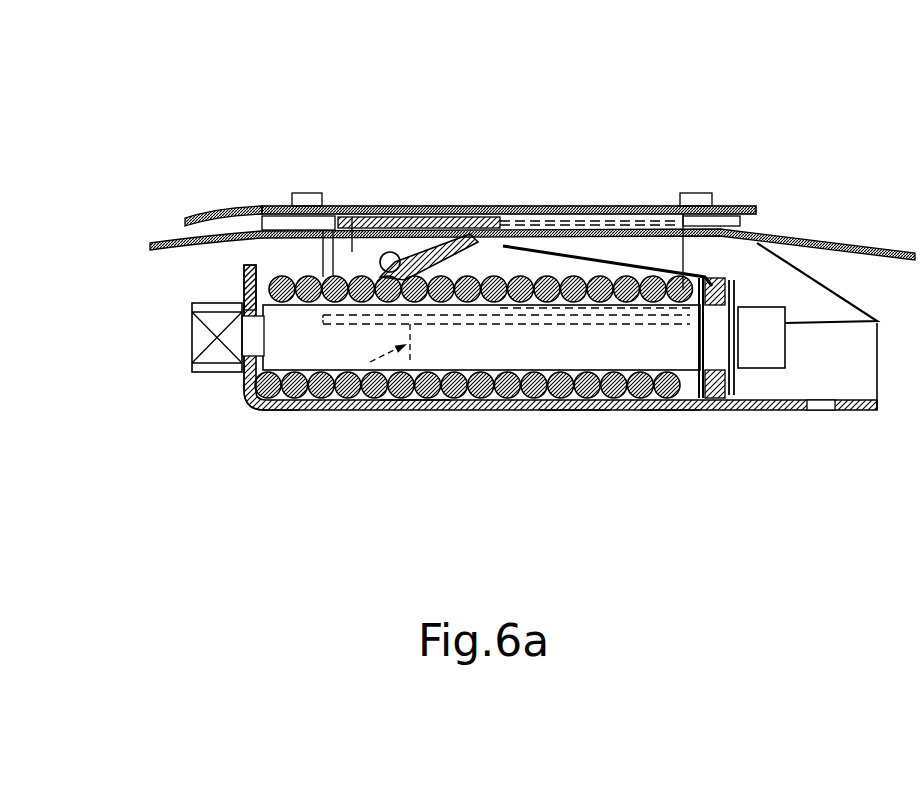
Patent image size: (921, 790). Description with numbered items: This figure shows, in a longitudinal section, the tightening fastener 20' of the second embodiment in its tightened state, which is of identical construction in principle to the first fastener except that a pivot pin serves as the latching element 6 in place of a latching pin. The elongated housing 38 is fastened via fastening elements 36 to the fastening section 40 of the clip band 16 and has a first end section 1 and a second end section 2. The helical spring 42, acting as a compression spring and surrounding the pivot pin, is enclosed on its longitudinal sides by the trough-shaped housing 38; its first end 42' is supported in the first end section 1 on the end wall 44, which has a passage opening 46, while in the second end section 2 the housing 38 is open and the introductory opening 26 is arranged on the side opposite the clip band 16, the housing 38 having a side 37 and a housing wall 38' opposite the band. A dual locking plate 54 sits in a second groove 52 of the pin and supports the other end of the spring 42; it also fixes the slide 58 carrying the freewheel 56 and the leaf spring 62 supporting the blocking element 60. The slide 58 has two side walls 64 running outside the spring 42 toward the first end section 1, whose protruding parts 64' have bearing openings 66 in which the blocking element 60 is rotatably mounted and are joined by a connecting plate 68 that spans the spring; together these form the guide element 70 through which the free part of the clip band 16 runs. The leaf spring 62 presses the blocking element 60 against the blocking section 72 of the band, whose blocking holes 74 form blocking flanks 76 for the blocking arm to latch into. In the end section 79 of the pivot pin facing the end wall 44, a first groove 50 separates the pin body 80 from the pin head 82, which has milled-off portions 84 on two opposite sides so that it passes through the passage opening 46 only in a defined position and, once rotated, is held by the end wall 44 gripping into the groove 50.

The first end section 1 is at (305, 130).
The second end section 2 is at (696, 122).
The wing 6 is at (913, 403).
The clip band 16 is at (150, 250).
The tightening fastener 20' is at (136, 80).
The introductory opening 26 is at (820, 405).
The fastening elements 36 is at (303, 193).
The side of the housing 37 is at (413, 428).
The housing 38 is at (535, 296).
The housing wall 38' is at (580, 457).
The fastening section 40 is at (620, 208).
The helical spring 42 is at (560, 384).
The first end of the spring 42' is at (272, 401).
The end wall 44 is at (228, 278).
The passage opening 46 is at (235, 318).
The first groove 50 is at (250, 343).
The second groove 52 is at (790, 308).
The dual locking plate 54 is at (740, 333).
The freewheel 56 is at (318, 251).
The slide 58 is at (522, 252).
The blocking element 60 is at (427, 206).
The leaf spring 62 is at (643, 262).
The side walls 64 is at (377, 401).
The parts of the side walls 64' is at (354, 185).
The bearing openings 66 is at (376, 256).
The connecting plate 68 is at (485, 206).
The guide element 70 is at (388, 192).
The blocking section 72 is at (582, 206).
The blocking holes 74 is at (405, 206).
The blocking flanks 76 is at (555, 225).
The end section 79 is at (225, 395).
The pin body 80 is at (318, 350).
The pin head 82 is at (203, 396).
The milled-off portions 84 is at (187, 358).